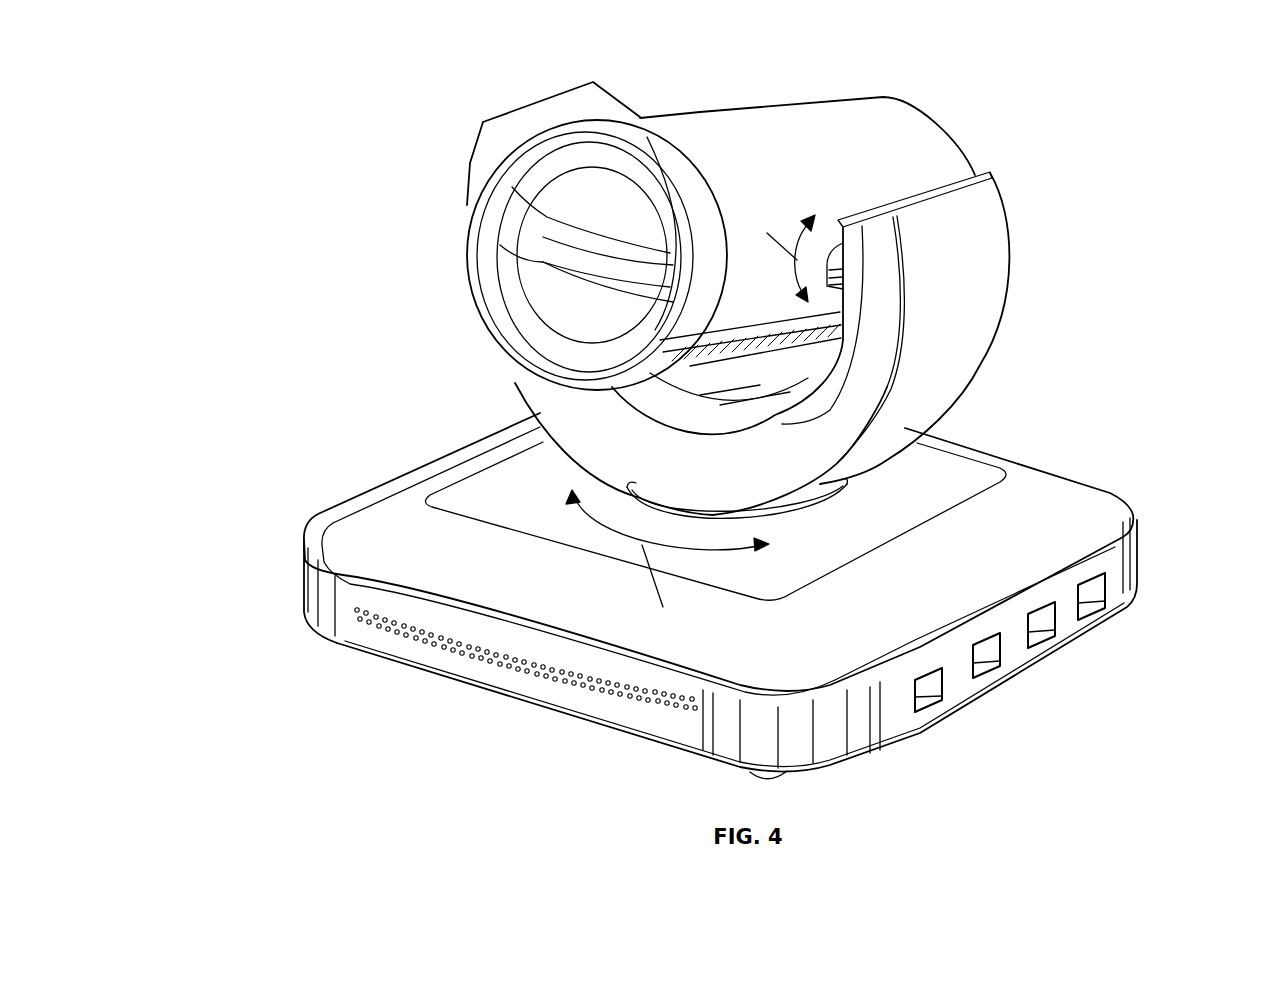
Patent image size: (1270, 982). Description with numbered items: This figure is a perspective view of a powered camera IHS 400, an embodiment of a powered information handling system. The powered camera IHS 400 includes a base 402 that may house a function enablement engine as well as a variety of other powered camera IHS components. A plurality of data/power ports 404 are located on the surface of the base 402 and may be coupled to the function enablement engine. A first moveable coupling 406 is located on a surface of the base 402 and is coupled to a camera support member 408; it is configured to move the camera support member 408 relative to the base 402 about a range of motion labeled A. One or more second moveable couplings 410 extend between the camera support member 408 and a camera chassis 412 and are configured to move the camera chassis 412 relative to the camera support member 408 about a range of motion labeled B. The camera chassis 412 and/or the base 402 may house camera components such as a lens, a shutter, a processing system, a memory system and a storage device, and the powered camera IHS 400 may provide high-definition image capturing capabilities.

The powered camera IHS 400 is at (222, 92).
The base 402 is at (1110, 503).
The data/power ports 404 is at (930, 705).
The first moveable coupling 406 is at (827, 505).
The camera support member 408 is at (962, 270).
The second moveable coupling 410 is at (840, 253).
The camera chassis 412 is at (765, 138).